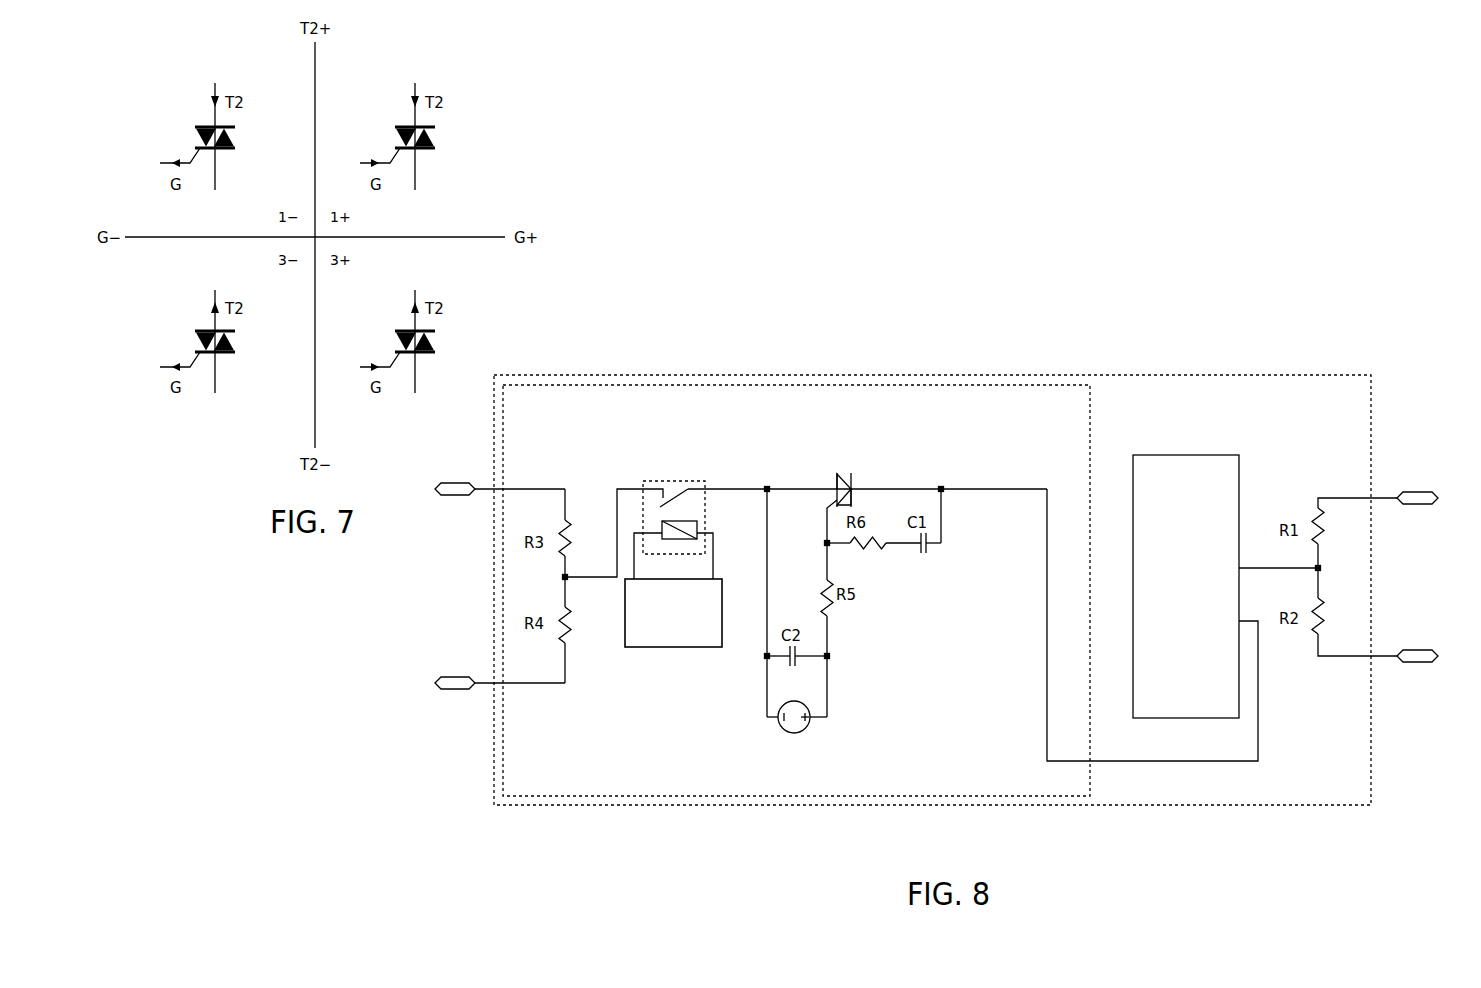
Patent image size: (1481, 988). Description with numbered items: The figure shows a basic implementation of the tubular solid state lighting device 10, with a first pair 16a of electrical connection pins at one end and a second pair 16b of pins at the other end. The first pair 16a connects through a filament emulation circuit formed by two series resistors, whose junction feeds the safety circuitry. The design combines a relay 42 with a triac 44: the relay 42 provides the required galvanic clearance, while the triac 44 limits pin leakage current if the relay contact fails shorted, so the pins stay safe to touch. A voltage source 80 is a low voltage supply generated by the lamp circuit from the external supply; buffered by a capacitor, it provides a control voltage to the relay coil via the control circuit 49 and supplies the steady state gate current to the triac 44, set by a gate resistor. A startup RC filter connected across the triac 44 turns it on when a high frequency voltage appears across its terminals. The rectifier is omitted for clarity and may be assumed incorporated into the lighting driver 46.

The tubular solid state lighting device 10 is at (494, 790).
The first pair of electrical connection pins 16a is at (462, 703).
The second pair of electrical connection pins 16b is at (1412, 474).
The relay 42 is at (687, 480).
The triac 44 is at (852, 480).
The lighting driver 46 is at (1200, 455).
The control circuit 49 is at (699, 643).
The voltage source 80 is at (806, 730).